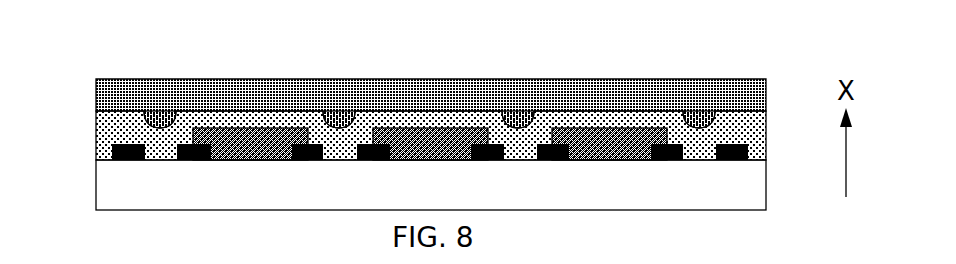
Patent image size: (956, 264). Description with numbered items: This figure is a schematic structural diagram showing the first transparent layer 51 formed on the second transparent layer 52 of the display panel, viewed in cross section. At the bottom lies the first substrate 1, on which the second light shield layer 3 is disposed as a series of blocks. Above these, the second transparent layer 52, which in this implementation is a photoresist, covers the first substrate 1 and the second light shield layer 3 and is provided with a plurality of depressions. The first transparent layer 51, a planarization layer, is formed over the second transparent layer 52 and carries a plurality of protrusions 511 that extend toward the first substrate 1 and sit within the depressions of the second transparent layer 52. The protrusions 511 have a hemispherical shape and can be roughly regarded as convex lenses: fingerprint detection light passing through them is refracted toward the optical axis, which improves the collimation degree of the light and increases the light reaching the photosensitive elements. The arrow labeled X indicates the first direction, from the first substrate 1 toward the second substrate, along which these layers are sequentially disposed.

The first substrate 1 is at (96, 187).
The second light shield layer 3 is at (747, 145).
The first transparent layer 51 is at (96, 87).
The second transparent layer 52 is at (96, 133).
The protrusions 511 is at (160, 120).